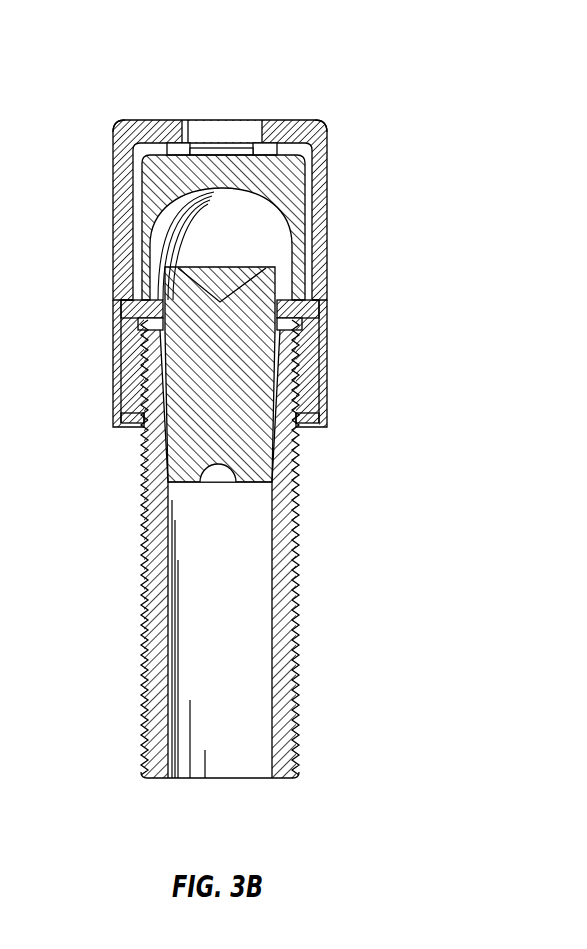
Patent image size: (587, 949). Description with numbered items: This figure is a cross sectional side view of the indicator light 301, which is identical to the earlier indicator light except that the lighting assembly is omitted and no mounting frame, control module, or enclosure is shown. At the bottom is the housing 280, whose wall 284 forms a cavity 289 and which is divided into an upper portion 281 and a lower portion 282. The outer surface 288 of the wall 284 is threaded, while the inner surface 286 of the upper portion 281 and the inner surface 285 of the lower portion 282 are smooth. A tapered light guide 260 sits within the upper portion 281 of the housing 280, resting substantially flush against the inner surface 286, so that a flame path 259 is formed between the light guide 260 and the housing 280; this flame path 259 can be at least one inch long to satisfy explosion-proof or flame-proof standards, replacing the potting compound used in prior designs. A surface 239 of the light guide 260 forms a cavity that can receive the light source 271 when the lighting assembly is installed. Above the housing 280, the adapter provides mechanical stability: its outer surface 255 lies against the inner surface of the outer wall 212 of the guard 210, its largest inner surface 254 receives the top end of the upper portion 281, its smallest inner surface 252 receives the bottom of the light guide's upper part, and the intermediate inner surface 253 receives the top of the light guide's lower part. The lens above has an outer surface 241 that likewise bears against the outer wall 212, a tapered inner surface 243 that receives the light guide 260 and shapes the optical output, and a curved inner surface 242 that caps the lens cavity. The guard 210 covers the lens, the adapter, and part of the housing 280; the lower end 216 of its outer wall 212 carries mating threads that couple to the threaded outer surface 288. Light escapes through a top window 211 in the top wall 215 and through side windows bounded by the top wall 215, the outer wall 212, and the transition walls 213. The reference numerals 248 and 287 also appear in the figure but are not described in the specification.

The indicator light 301 is at (308, 68).
The guard 210 is at (110, 156).
The top window 211 is at (220, 140).
The transition walls 213 is at (262, 150).
The top wall 215 is at (142, 120).
The outer surface 241 is at (318, 128).
The inner surface 242 is at (240, 198).
The inner surface 243 is at (308, 240).
The inner surface 252 is at (278, 272).
The surface 239 is at (238, 470).
The plug body 248 is at (258, 486).
The outer wall 212 is at (121, 299).
The light guide 260 is at (138, 462).
The inner surface 253 is at (324, 315).
The flame path 259 is at (142, 362).
The outer surface 255 is at (303, 372).
The lower end 216 is at (130, 429).
The inner surface 254 is at (300, 400).
The upper portion 281 is at (137, 444).
The internal thread 287 is at (302, 340).
The housing 280 is at (135, 783).
The lower portion 282 is at (123, 484).
The inner surface 286 is at (292, 451).
The inner surface 285 is at (290, 565).
The outer surface 288 is at (300, 712).
The wall 284 is at (290, 648).
The light source 271 is at (221, 484).
The cavity 289 is at (228, 752).